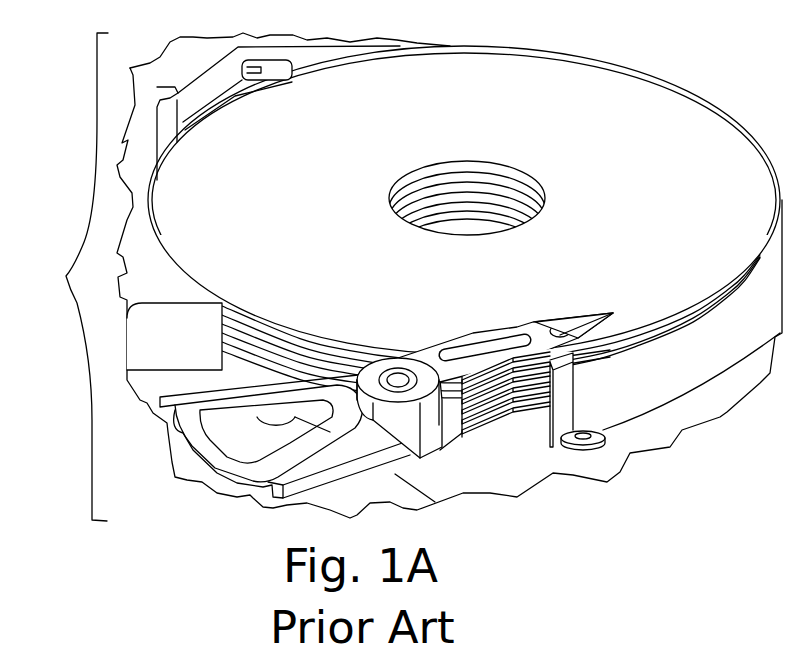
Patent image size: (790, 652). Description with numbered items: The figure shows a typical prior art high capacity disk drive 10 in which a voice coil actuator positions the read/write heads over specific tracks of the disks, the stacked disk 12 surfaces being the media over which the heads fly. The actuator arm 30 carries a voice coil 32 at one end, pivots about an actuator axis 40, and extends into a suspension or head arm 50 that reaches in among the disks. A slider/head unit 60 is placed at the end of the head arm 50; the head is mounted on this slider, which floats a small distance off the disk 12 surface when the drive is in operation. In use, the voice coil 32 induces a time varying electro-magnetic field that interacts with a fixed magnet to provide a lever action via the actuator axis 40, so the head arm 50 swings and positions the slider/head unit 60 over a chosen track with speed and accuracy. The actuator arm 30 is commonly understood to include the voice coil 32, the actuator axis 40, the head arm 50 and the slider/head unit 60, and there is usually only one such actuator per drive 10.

The high capacity disk drive 10 is at (403, 277).
The disk 12 is at (690, 125).
The actuator arm 30 is at (437, 437).
The voice coil 32 is at (242, 470).
The actuator axis 40 is at (393, 368).
The head arm 50 is at (512, 337).
The slider/head unit 60 is at (600, 323).